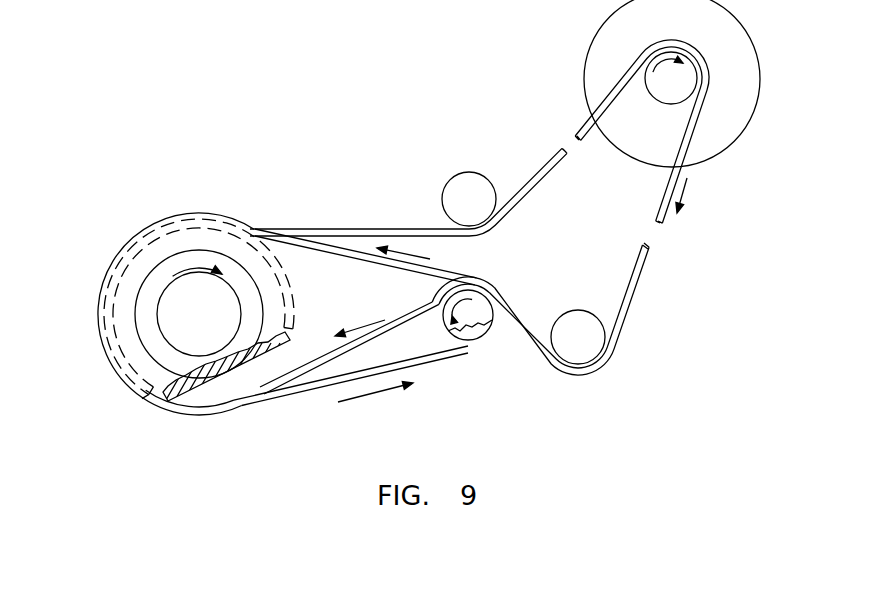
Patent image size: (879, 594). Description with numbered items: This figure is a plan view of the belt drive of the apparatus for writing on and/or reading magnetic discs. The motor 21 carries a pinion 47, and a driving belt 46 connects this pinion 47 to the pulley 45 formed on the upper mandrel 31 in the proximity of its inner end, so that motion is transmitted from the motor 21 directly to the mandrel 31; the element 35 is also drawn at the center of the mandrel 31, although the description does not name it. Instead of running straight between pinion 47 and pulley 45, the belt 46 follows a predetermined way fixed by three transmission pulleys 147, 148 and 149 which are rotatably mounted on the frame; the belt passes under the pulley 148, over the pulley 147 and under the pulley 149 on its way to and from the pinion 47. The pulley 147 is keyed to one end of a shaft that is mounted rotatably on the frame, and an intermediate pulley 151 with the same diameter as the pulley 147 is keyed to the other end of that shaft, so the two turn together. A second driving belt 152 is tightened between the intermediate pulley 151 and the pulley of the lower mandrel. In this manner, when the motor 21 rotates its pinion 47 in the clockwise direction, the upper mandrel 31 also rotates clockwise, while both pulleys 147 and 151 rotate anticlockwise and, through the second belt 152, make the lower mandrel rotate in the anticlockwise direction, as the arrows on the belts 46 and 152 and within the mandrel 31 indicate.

The motor 21 is at (612, 52).
The pinion 47 is at (657, 92).
The transmission pulley 148 is at (472, 185).
The transmission pulley 147 is at (485, 307).
The transmission pulley 149 is at (578, 326).
The intermediate pulley 151 is at (480, 334).
The second driving belt 152 is at (430, 357).
The driving belt 46 is at (402, 316).
The drum 35 is at (175, 305).
The upper mandrel 31 is at (147, 380).
The pulley 45 is at (212, 396).